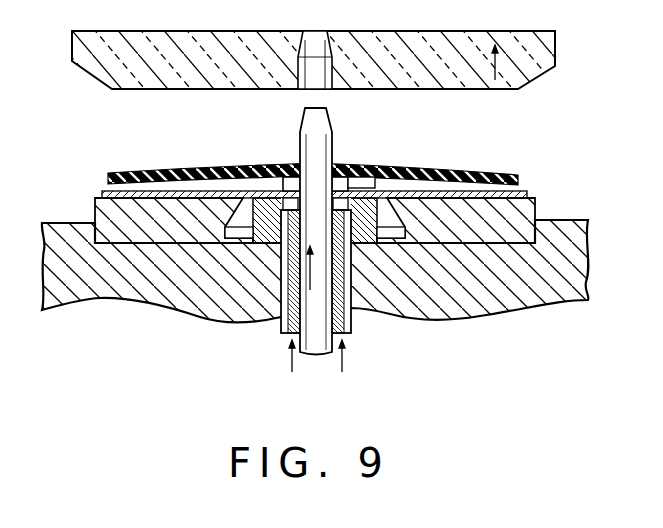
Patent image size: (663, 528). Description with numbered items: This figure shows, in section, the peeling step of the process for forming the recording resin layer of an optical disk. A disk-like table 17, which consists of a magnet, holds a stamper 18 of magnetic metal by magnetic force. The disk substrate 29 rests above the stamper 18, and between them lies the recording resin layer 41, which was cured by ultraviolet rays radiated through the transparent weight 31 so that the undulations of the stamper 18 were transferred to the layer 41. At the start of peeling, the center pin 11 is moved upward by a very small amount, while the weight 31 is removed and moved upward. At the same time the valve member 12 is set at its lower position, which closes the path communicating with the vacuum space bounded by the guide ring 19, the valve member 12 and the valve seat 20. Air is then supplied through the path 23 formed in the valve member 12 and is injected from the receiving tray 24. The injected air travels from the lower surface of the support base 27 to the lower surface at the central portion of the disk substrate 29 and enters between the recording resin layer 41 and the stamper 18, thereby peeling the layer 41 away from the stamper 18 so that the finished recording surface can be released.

The weight 31 is at (484, 33).
The center pin 11 is at (305, 146).
The receiving tray 24 is at (287, 180).
The support base 27 is at (337, 176).
The recording resin layer 41 is at (372, 182).
The disk substrate 29 is at (452, 175).
The stamper 18 is at (526, 192).
The table 17 is at (537, 205).
The guide ring 19 is at (246, 243).
The path 23 is at (290, 325).
The valve seat 20 is at (358, 226).
The valve member 12 is at (352, 332).